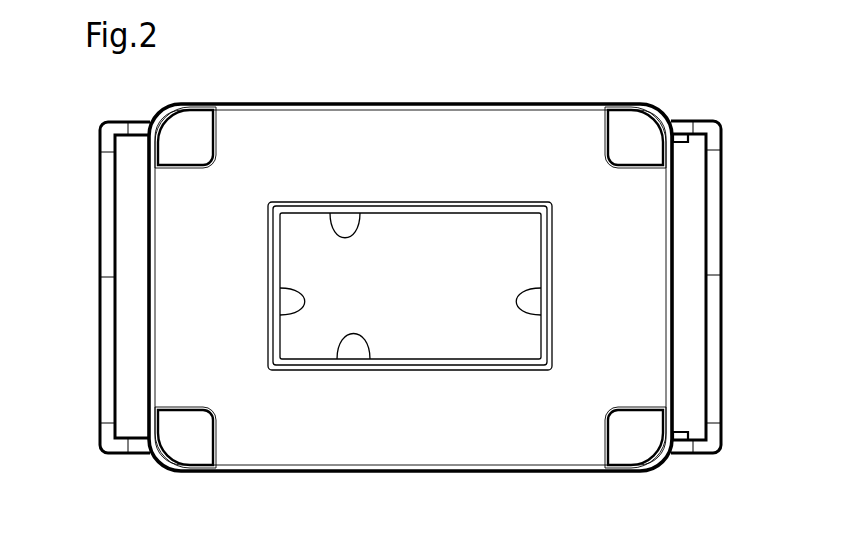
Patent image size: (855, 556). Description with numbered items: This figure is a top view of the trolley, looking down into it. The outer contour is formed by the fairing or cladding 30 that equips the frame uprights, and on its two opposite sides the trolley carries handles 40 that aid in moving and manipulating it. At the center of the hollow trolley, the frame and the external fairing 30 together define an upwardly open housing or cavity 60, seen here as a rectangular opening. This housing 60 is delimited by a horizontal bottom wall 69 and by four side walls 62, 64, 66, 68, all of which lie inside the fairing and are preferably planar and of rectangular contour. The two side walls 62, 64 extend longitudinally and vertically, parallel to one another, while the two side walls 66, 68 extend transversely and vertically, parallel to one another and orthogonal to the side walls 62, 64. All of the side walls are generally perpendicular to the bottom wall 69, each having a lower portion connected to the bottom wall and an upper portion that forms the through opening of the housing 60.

The fairing or cladding 30 is at (522, 425).
The handles 40 is at (108, 231).
The housing or cavity 60 is at (399, 278).
The side wall 62 is at (330, 213).
The side wall 64 is at (337, 359).
The side wall 66 is at (533, 314).
The side wall 68 is at (280, 315).
The bottom wall 69 is at (481, 267).